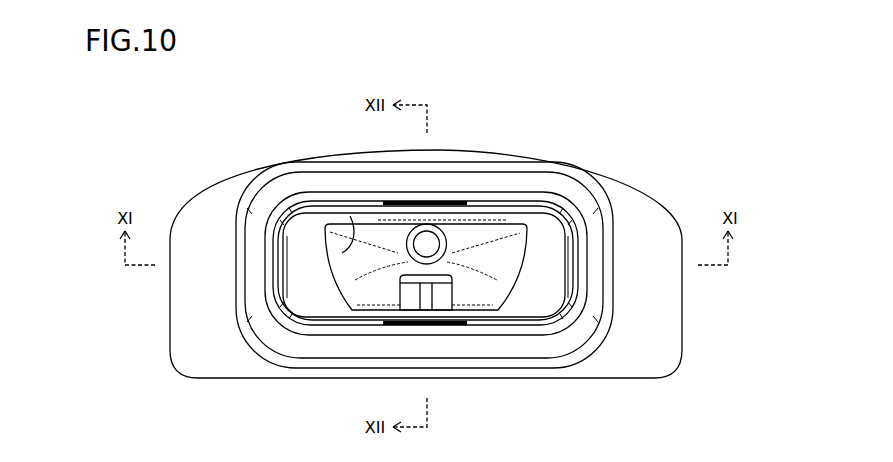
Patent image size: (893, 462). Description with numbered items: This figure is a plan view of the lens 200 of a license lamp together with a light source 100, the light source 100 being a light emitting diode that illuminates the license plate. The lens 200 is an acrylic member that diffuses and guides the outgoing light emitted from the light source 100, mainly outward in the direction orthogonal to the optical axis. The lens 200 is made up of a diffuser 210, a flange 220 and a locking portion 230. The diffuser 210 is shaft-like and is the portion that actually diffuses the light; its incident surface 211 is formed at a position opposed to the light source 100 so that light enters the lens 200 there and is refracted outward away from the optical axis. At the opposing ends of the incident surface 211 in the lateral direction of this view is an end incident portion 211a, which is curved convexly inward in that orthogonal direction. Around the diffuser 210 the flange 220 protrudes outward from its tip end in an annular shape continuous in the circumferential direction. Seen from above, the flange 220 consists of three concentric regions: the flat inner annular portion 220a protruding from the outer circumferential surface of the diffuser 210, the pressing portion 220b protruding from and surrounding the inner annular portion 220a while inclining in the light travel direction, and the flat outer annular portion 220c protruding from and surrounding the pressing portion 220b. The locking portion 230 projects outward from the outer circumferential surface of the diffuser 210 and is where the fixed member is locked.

The light source 100 is at (442, 303).
The lens 200 is at (450, 85).
The diffuser 210 is at (543, 237).
The incident surface 211 is at (378, 233).
The end incident portion 211a is at (345, 228).
The flange 220 is at (498, 120).
The inner annular portion 220a is at (532, 190).
The pressing portion 220b is at (594, 195).
The outer annular portion 220c is at (648, 203).
The locking portion 230 is at (587, 265).